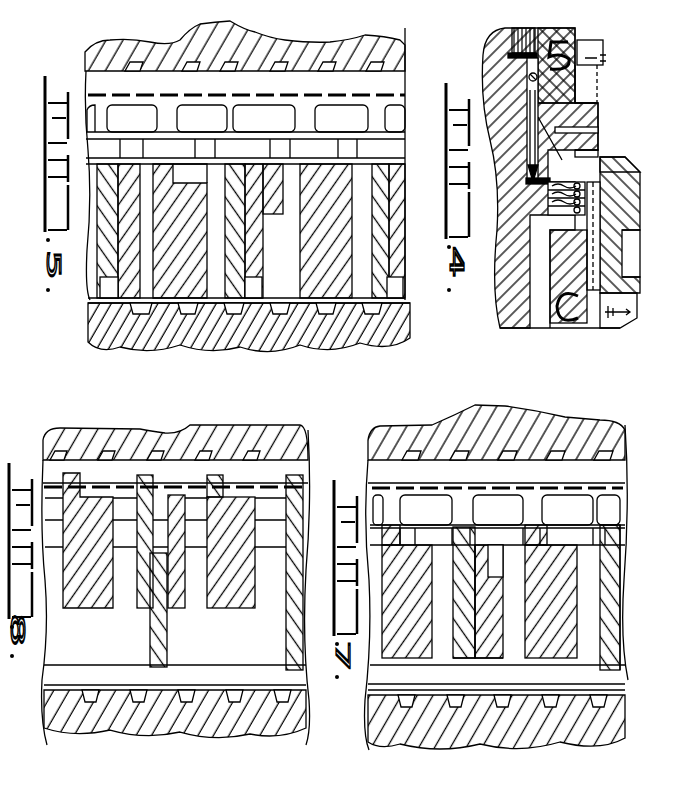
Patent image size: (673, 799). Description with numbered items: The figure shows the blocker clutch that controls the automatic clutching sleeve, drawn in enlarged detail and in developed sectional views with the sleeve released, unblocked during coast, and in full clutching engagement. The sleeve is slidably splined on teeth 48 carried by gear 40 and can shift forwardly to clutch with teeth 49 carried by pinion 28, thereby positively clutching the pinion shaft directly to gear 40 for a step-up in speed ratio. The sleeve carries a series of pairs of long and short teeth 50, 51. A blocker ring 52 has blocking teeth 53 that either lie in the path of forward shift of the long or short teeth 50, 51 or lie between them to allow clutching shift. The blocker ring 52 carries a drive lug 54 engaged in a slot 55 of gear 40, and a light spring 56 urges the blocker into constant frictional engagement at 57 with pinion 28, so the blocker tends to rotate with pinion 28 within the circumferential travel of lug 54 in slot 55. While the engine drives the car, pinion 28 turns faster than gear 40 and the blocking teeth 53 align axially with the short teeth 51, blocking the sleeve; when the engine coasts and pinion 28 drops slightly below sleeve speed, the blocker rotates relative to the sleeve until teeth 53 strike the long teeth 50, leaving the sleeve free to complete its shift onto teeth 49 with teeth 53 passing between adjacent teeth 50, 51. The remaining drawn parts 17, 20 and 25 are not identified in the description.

In FIG. 5, the base plate 17 is at (366, 304).
In FIG. 4, the base plate 17 is at (625, 283).
In FIG. 8, the base plate 17 is at (236, 668).
In FIG. 7, the base plate 17 is at (556, 660).
In FIG. 4, the body 20 is at (500, 325).
In FIG. 8, the body 20 is at (215, 432).
In FIG. 5, the support block 25 is at (207, 235).
In FIG. 5, the pinion 28 is at (318, 50).
In FIG. 4, the pinion 28 is at (604, 42).
In FIG. 8, the pinion 28 is at (175, 442).
In FIG. 7, the pinion 28 is at (425, 440).
In FIG. 5, the gear 40 is at (330, 340).
In FIG. 4, the gear 40 is at (620, 328).
In FIG. 8, the gear 40 is at (222, 740).
In FIG. 7, the gear 40 is at (562, 755).
In FIG. 5, the teeth 48 is at (405, 275).
In FIG. 4, the teeth 48 is at (600, 240).
In FIG. 8, the teeth 48 is at (180, 650).
In FIG. 7, the teeth 48 is at (635, 645).
In FIG. 5, the teeth 49 is at (86, 118).
In FIG. 4, the teeth 49 is at (598, 112).
In FIG. 8, the teeth 49 is at (266, 580).
In FIG. 7, the teeth 49 is at (600, 508).
In FIG. 5, the long teeth 50 is at (308, 240).
In FIG. 7, the long teeth 50 is at (450, 530).
In FIG. 5, the short teeth 51 is at (275, 212).
In FIG. 4, the short teeth 51 is at (552, 125).
In FIG. 8, the short teeth 51 is at (185, 498).
In FIG. 7, the short teeth 51 is at (505, 545).
In FIG. 5, the blocker ring 52 is at (86, 162).
In FIG. 8, the blocker ring 52 is at (303, 547).
In FIG. 7, the blocker ring 52 is at (625, 548).
In FIG. 4, the blocking teeth 53 is at (598, 152).
In FIG. 5, the drive lug 54 is at (262, 250).
In FIG. 4, the drive lug 54 is at (622, 190).
In FIG. 8, the drive lug 54 is at (188, 600).
In FIG. 7, the drive lug 54 is at (506, 600).
In FIG. 5, the slot 55 is at (158, 165).
In FIG. 4, the slot 55 is at (625, 165).
In FIG. 8, the slot 55 is at (110, 570).
In FIG. 7, the slot 55 is at (495, 650).
In FIG. 4, the spring 56 is at (568, 271).
In FIG. 4, the frictional engagement 57 is at (528, 172).